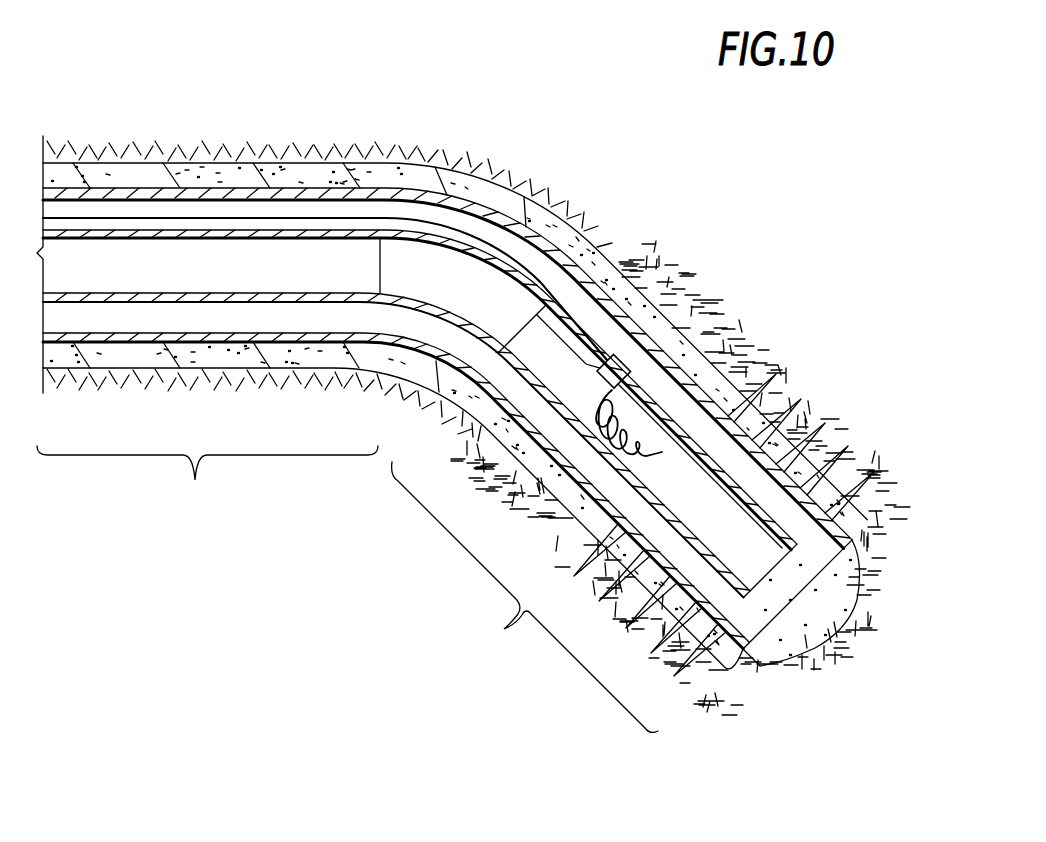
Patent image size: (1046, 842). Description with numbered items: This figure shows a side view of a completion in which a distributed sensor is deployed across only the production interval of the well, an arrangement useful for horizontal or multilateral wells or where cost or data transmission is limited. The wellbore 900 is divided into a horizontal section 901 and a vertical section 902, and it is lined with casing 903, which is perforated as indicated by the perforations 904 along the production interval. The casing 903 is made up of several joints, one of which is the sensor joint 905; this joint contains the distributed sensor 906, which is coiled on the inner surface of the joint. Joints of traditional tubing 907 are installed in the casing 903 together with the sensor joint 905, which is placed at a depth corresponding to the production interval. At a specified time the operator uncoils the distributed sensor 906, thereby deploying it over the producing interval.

The wellbore 900 is at (146, 90).
The horizontal section 901 is at (207, 478).
The vertical section 902 is at (525, 597).
The casing 903 is at (620, 293).
The perforations 904 is at (788, 395).
The sensor joint 905 is at (556, 347).
The distributed sensor 906 is at (324, 218).
The tubing 907 is at (228, 235).